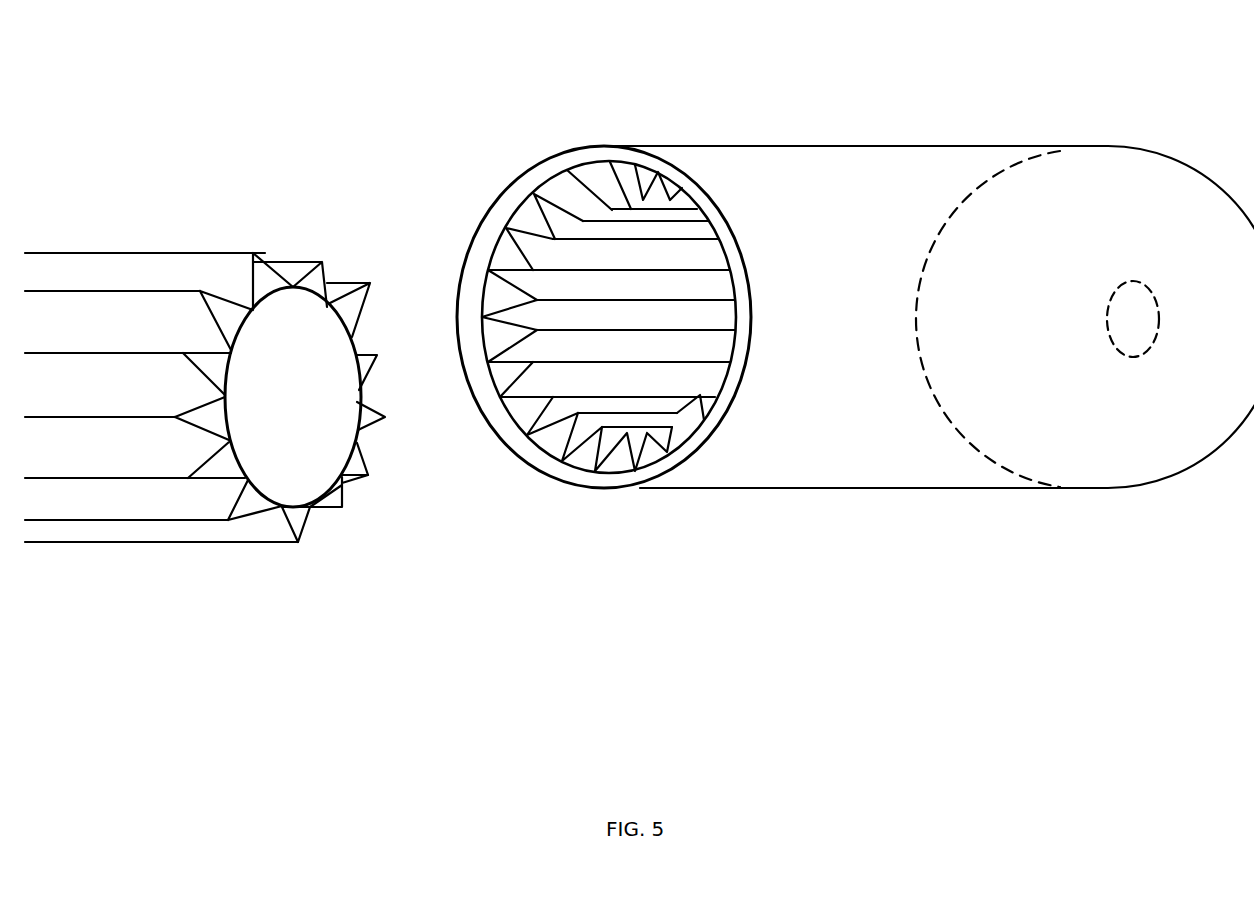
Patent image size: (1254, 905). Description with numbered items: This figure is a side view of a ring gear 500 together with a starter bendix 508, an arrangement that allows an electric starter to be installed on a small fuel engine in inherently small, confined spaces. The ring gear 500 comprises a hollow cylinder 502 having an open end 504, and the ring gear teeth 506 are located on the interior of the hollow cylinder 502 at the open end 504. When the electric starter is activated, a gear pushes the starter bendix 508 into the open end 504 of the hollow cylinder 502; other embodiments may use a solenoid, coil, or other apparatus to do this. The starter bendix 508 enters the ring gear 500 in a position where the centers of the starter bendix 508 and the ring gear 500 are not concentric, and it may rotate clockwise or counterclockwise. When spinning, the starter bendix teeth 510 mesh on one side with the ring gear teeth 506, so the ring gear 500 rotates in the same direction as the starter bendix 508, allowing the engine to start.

The ring gear 500 is at (855, 399).
The hollow cylinder 502 is at (866, 147).
The open end 504 is at (498, 192).
The ring gear teeth 506 is at (557, 433).
The starter bendix 508 is at (205, 400).
The starter bendix teeth 510 is at (264, 256).